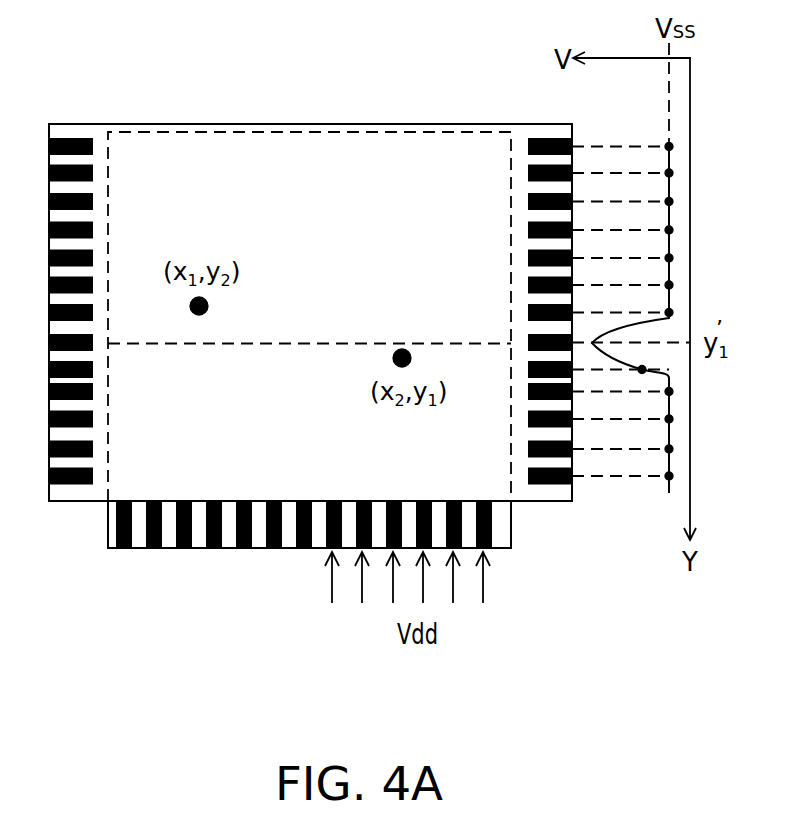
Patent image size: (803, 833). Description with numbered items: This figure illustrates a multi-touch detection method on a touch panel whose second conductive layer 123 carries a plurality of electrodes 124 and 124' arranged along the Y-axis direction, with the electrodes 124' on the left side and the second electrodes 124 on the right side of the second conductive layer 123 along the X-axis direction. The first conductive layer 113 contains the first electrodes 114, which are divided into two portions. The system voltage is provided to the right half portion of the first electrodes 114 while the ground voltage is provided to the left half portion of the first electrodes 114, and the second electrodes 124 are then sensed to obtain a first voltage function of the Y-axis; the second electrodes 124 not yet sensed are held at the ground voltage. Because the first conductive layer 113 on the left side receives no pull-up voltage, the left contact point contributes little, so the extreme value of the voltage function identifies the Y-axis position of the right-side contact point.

The second conductive layer 123 is at (547, 501).
The electrodes 124' is at (88, 273).
The second electrodes 124 is at (535, 273).
The first conductive layer 113 is at (512, 523).
The first electrodes 114 is at (115, 520).